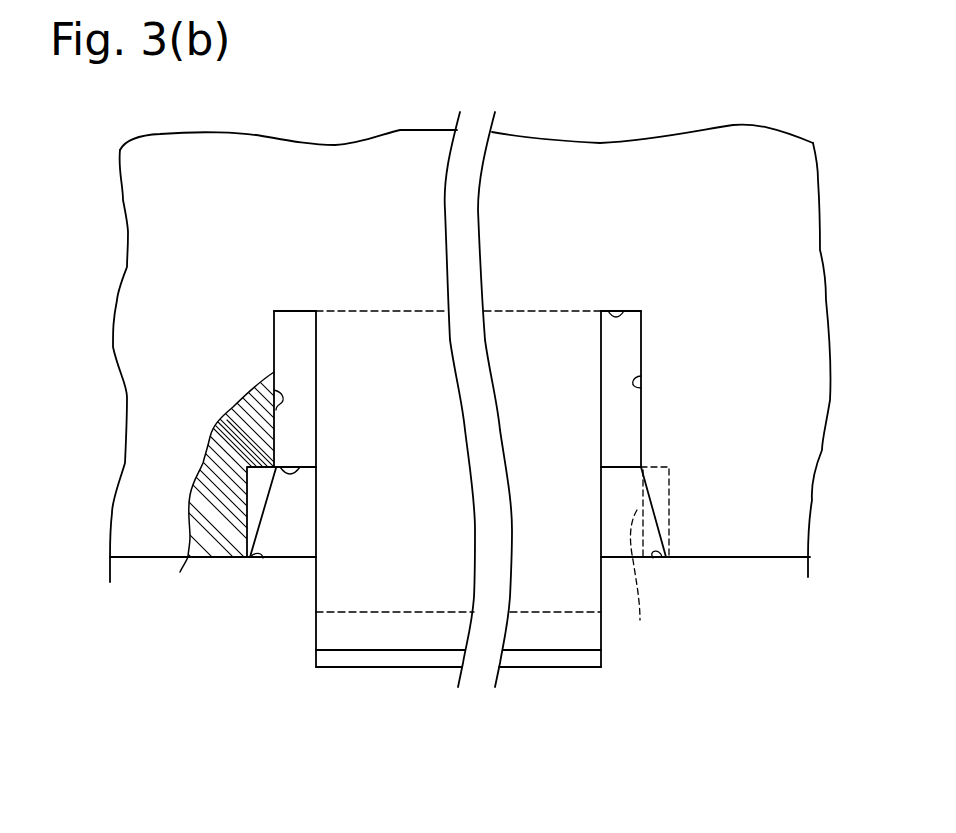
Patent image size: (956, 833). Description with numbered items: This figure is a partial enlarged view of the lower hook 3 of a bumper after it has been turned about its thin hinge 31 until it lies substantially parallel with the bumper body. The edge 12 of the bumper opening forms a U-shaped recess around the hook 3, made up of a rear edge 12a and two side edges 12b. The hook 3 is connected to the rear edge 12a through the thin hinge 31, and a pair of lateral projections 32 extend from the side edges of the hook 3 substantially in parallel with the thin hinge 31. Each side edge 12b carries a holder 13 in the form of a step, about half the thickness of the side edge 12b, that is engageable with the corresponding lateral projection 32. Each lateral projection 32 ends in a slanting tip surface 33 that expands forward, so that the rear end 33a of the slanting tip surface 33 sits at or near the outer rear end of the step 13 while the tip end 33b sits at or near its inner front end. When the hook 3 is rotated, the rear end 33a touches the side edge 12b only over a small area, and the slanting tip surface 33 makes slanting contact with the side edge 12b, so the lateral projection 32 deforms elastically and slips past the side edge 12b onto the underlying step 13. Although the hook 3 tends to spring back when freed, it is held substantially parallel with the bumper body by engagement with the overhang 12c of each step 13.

The lower hook 3 is at (455, 545).
The thin hinge 31 is at (390, 320).
The lateral projection 32 is at (293, 543).
The slanting tip surface 33 is at (268, 517).
The rear end of slanting tip surface 33a is at (300, 467).
The tip end of slanting tip surface 33b is at (263, 558).
The edge of opening 12 is at (762, 560).
The rear edge 12a is at (623, 311).
The side edge 12b is at (274, 390).
The overhang 12c is at (641, 577).
The holder 13 is at (258, 490).